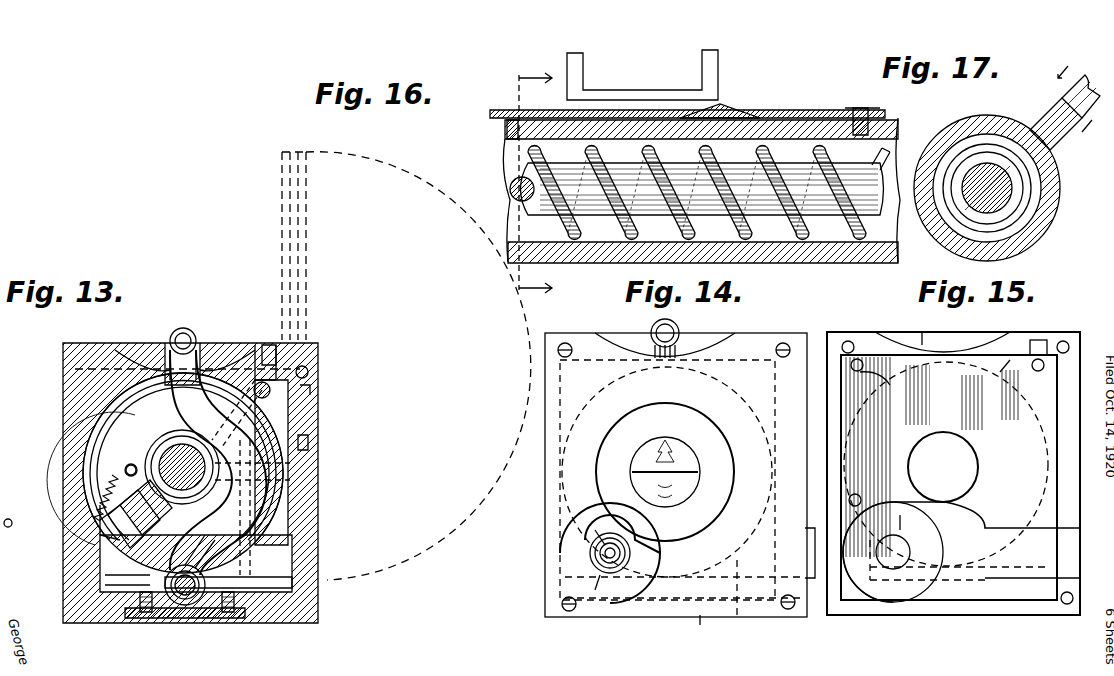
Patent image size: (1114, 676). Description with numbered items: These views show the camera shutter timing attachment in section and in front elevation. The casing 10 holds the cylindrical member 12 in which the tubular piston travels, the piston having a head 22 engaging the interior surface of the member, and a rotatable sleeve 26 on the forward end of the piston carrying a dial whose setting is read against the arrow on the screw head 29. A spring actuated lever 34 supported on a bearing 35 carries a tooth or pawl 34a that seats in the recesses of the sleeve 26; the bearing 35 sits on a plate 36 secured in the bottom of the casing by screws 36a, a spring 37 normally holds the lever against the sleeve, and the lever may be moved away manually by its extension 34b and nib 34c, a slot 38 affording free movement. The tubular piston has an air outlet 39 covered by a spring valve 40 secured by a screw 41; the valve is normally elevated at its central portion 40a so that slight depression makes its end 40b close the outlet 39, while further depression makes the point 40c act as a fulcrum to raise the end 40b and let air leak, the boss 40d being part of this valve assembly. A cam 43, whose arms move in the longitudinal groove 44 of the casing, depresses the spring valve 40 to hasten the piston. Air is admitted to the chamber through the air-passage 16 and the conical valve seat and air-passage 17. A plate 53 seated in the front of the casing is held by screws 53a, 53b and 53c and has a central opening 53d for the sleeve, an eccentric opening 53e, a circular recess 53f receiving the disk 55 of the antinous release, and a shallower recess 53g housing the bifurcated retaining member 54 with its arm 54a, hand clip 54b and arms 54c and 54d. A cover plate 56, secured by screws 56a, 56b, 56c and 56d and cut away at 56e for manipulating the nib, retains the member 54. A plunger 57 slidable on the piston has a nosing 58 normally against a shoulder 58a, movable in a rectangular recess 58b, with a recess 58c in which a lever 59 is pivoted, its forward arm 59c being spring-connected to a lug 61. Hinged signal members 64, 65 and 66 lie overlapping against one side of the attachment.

In FIG. 13, the casing 10 is at (75, 385).
In FIG. 15, the casing 10 is at (848, 340).
In FIG. 13, the cylindrical member 12 is at (83, 420).
In FIG. 13, the head 22 is at (105, 452).
In FIG. 13, the sleeve 26 is at (170, 445).
In FIG. 14, the screw head 29 is at (642, 420).
In FIG. 13, the spring actuated lever 34 is at (250, 485).
In FIG. 13, the tooth or pawl 34a is at (265, 462).
In FIG. 13, the extension 34b is at (195, 350).
In FIG. 13, the nib 34c is at (180, 330).
In FIG. 13, the bearing 35 is at (190, 598).
In FIG. 13, the plate 36 is at (175, 606).
In FIG. 13, the screws 36a is at (146, 614).
In FIG. 13, the spring 37 is at (262, 618).
In FIG. 13, the slot 38 is at (160, 365).
In FIG. 16, the air outlet 39 is at (507, 130).
In FIG. 17, the air outlet 39 is at (1015, 150).
In FIG. 16, the spring valve 40 is at (560, 110).
In FIG. 17, the spring valve 40 is at (1065, 215).
In FIG. 16, the central portion 40a is at (728, 105).
In FIG. 16, the end 40b is at (510, 118).
In FIG. 16, the fulcrum point 40c is at (528, 140).
In FIG. 17, the boss 40d is at (1048, 120).
In FIG. 16, the screw 41 is at (860, 108).
In FIG. 13, the cam 43 is at (262, 350).
In FIG. 16, the cam 43 is at (640, 92).
In FIG. 13, the longitudinal groove or recess 44 is at (276, 345).
In FIG. 15, the longitudinal groove or recess 44 is at (1040, 340).
In FIG. 15, the plate 53 is at (878, 360).
In FIG. 15, the screw 53a is at (880, 380).
In FIG. 15, the screw 53b is at (857, 495).
In FIG. 15, the screw 53c is at (1017, 368).
In FIG. 15, the central opening 53d is at (960, 452).
In FIG. 15, the eccentrically disposed opening 53e is at (893, 552).
In FIG. 15, the circular recess 53f is at (891, 521).
In FIG. 15, the communicating recess 53g is at (961, 552).
In FIG. 14, the bifurcated retaining member 54 is at (640, 550).
In FIG. 14, the arm 54a is at (805, 553).
In FIG. 14, the hand clip 54b is at (718, 631).
In FIG. 14, the arm 54c is at (600, 530).
In FIG. 14, the arm 54d is at (597, 585).
In FIG. 14, the disk 55 is at (575, 550).
In FIG. 14, the plate 56 is at (556, 462).
In FIG. 14, the screw 56a is at (789, 609).
In FIG. 14, the screw 56b is at (567, 611).
In FIG. 14, the screw 56c is at (782, 343).
In FIG. 14, the screw 56d is at (563, 343).
In FIG. 14, the cut away portion 56e is at (620, 348).
In FIG. 15, the cut away portion 56e is at (927, 325).
In FIG. 13, the plunger 57 is at (112, 500).
In FIG. 13, the nosing 58 is at (120, 555).
In FIG. 13, the shoulder 58a is at (105, 578).
In FIG. 13, the rectangular recess 58b is at (100, 588).
In FIG. 13, the recess 58c is at (108, 518).
In FIG. 13, the lever 59 is at (100, 530).
In FIG. 13, the forward arm 59c is at (100, 527).
In FIG. 13, the lug 61 is at (125, 470).
In FIG. 13, the hinged member 64 is at (310, 390).
In FIG. 13, the hinged member 65 is at (315, 418).
In FIG. 13, the hinged member 66 is at (308, 443).
In FIG. 16, the air-passage 16 is at (908, 240).
In FIG. 17, the air-passage 16 is at (1073, 91).
In FIG. 16, the valve seat and air-passage 17 is at (521, 178).